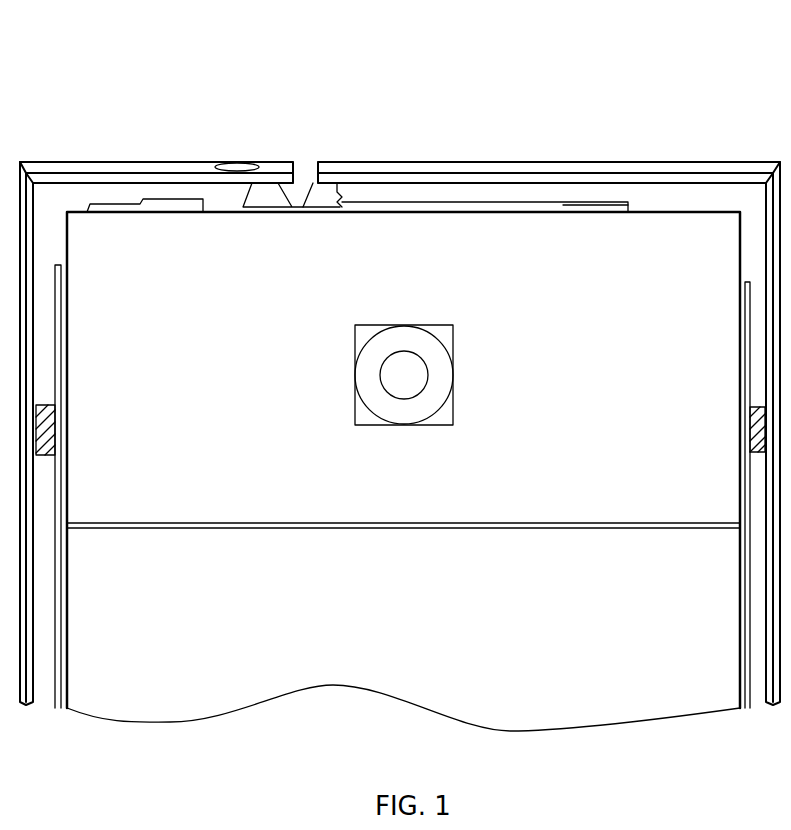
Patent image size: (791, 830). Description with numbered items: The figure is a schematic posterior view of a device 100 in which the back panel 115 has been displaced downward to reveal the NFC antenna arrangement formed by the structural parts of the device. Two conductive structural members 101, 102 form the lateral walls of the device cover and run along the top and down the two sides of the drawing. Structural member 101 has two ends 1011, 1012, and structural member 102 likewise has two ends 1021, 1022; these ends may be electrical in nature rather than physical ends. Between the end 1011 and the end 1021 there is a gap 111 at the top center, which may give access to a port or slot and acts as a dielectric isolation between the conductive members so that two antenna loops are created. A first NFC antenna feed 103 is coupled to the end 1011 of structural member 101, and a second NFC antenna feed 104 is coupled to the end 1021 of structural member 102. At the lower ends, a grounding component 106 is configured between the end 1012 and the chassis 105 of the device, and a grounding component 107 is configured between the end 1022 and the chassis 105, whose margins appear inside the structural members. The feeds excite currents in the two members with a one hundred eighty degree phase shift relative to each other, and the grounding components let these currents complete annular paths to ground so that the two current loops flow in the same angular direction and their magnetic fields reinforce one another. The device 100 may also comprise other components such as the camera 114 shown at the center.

The device 100 is at (73, 77).
The conductive structural member 101 is at (50, 162).
The conductive structural member 102 is at (735, 162).
The end of structural member 1011 is at (270, 163).
The end of structural member 1021 is at (360, 163).
The gap 111 is at (308, 160).
The first NFC antenna feed 103 is at (262, 197).
The second NFC antenna feed 104 is at (320, 197).
The chassis 105 is at (58, 343).
The grounding component 106 is at (50, 435).
The grounding component 107 is at (758, 425).
The end of structural member 1012 is at (32, 505).
The end of structural member 1022 is at (768, 517).
The camera 114 is at (453, 378).
The back panel 115 is at (572, 725).